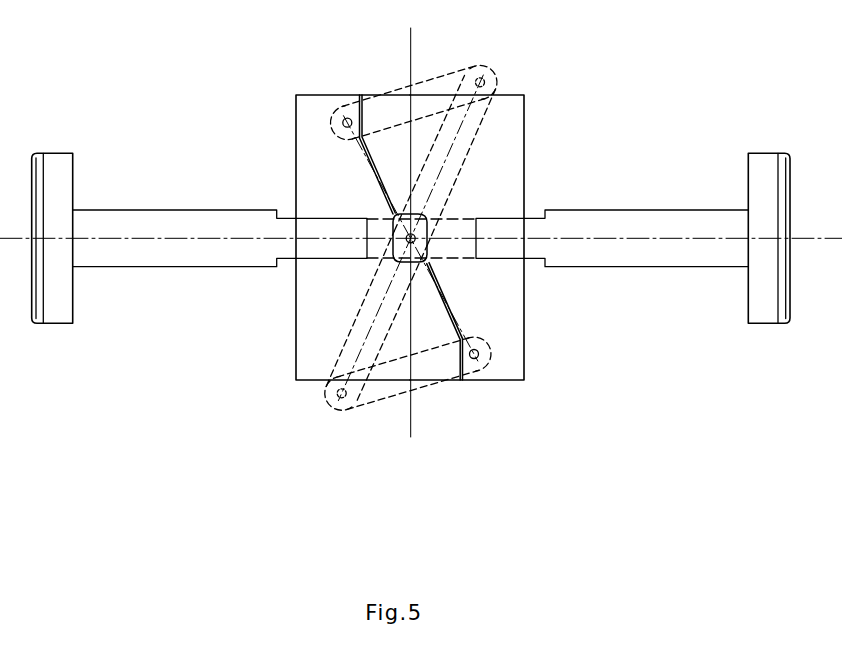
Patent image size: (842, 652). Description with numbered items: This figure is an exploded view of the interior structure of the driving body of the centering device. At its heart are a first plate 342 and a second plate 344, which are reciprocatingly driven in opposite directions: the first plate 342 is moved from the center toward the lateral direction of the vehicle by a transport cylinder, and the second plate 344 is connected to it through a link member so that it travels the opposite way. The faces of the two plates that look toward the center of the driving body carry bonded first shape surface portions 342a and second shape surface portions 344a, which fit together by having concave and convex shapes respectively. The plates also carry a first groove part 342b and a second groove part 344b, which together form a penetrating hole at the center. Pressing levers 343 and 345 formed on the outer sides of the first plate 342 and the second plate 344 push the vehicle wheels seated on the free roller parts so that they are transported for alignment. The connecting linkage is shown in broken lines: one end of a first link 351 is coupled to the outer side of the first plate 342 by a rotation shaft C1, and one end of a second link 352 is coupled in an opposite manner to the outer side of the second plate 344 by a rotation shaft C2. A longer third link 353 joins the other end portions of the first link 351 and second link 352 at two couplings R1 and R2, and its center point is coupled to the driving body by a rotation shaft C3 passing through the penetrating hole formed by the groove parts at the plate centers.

The first plate 342 is at (309, 102).
The first shape surface portion 342a is at (446, 292).
The first groove part 342b is at (397, 216).
The pressing lever 343 is at (55, 170).
The second plate 344 is at (517, 103).
The second shape surface portion 344a is at (453, 317).
The second groove part 344b is at (400, 263).
The pressing lever 345 is at (765, 160).
The first link 351 is at (440, 82).
The second link 352 is at (382, 388).
The third link 353 is at (375, 300).
The rotation shaft C1 is at (348, 116).
The rotation shaft C2 is at (473, 360).
The rotation shaft C3 is at (430, 218).
The coupling R1 is at (482, 80).
The coupling R2 is at (342, 398).